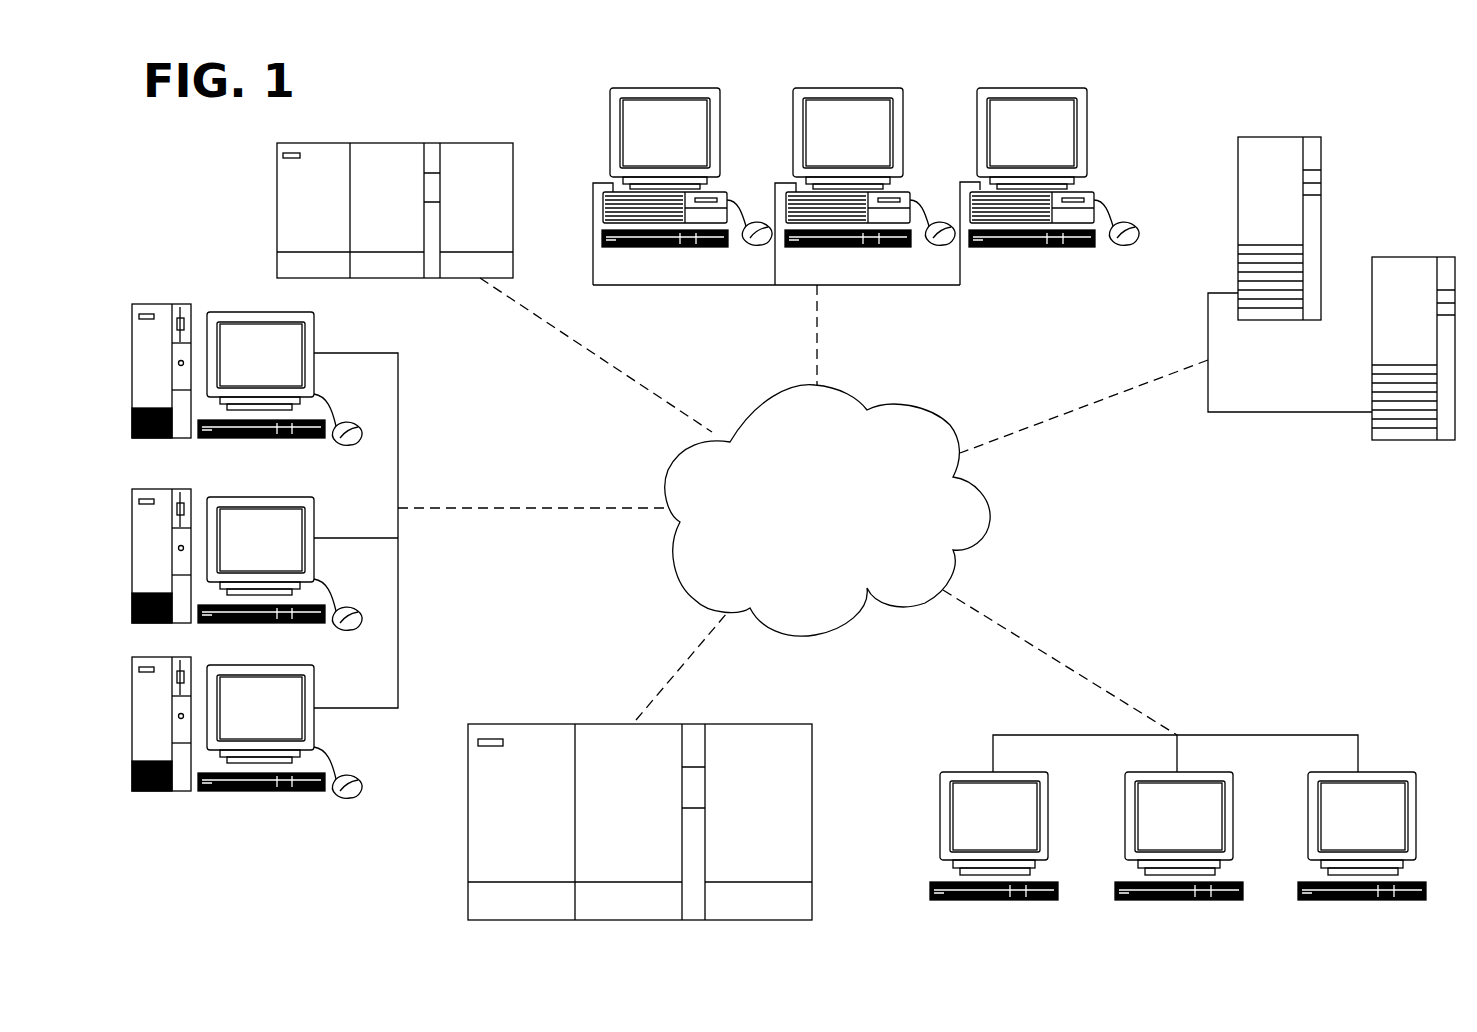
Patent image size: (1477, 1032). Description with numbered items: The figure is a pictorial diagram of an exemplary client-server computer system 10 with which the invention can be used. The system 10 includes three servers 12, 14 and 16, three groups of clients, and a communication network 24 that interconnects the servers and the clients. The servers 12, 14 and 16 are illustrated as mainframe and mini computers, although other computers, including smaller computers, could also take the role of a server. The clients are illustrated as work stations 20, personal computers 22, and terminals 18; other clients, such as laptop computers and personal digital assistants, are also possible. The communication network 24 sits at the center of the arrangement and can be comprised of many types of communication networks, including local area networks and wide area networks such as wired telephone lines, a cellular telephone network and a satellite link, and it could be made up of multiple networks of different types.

The client-server computer system 10 is at (396, 90).
The server 12 is at (277, 175).
The server 14 is at (1389, 114).
The server 16 is at (762, 724).
The terminals 18 is at (1252, 696).
The work stations 20 is at (385, 637).
The personal computers 22 is at (885, 266).
The communication network 24 is at (853, 613).